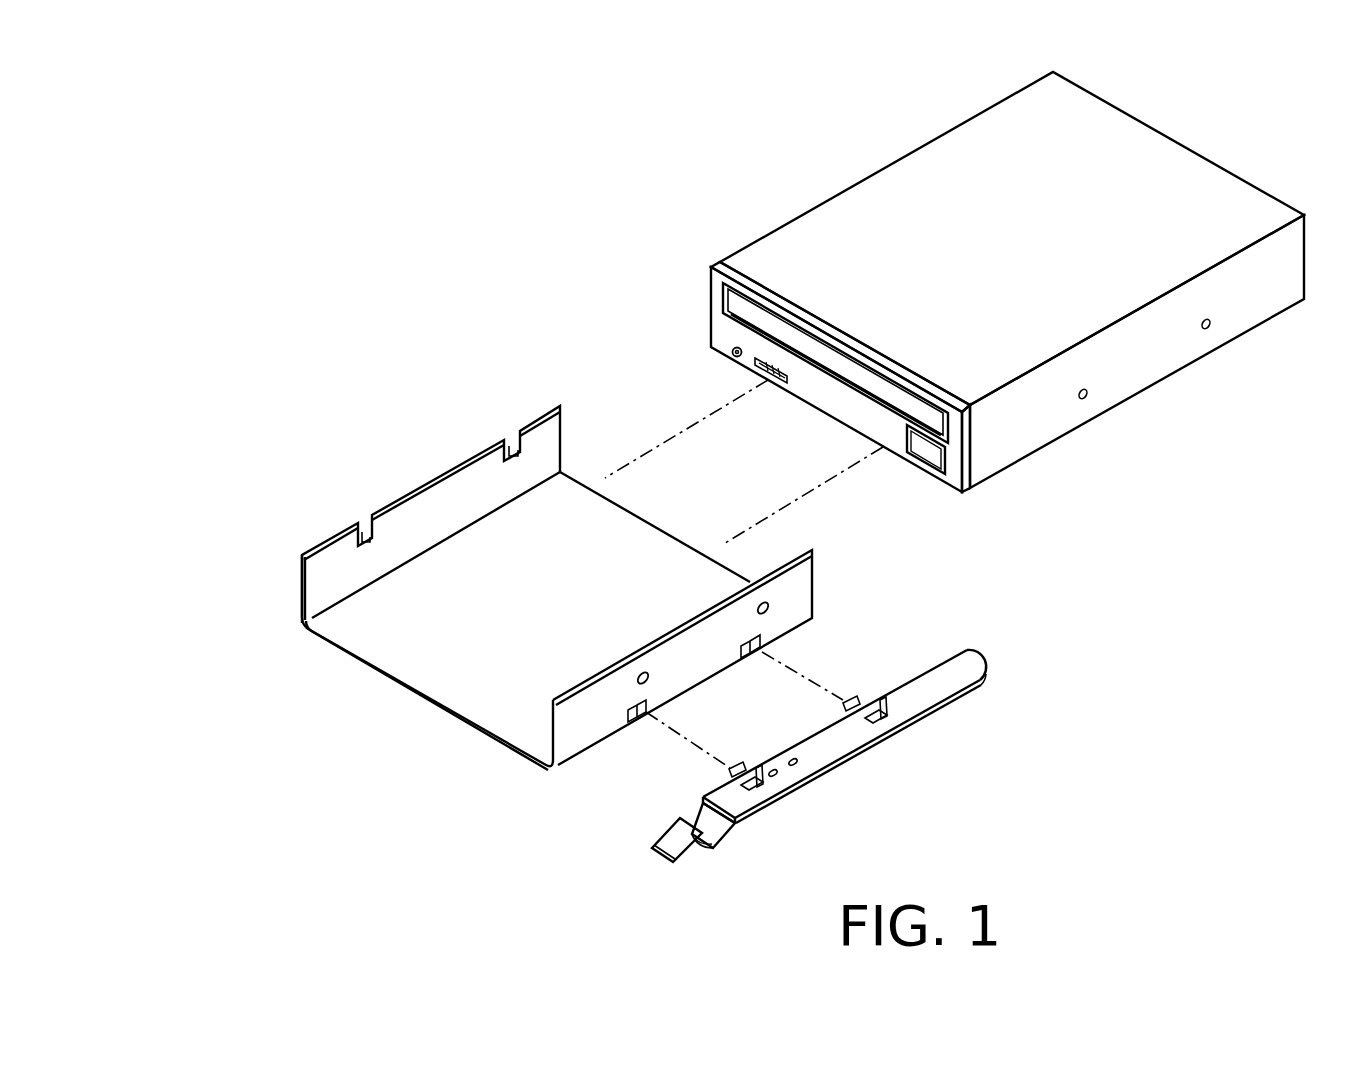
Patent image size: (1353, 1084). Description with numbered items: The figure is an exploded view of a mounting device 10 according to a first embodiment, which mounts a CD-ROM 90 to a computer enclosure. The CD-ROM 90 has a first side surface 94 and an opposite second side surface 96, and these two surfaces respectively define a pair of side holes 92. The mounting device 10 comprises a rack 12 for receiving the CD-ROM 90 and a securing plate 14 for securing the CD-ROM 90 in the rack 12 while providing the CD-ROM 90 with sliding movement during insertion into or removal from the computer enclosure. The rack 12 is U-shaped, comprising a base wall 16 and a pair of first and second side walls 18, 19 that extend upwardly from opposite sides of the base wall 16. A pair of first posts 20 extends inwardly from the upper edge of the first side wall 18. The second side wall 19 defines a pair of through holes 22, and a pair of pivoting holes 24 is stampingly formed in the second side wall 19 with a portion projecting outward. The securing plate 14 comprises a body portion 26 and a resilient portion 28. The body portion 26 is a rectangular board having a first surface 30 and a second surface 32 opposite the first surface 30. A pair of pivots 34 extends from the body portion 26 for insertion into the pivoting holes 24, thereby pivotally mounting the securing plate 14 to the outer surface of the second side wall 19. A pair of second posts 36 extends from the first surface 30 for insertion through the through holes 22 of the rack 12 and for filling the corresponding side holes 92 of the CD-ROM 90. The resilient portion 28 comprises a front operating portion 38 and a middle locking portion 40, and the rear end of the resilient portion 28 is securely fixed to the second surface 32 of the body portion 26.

The mounting device 10 is at (293, 745).
The rack 12 is at (520, 626).
The securing plate 14 is at (841, 755).
The base wall 16 is at (443, 657).
The first side wall 18 is at (318, 576).
The second side wall 19 is at (578, 723).
The first posts 20 is at (517, 445).
The through holes 22 is at (772, 608).
The pivoting holes 24 is at (762, 655).
The body portion 26 is at (975, 688).
The resilient portion 28 is at (725, 828).
The first surface 30 is at (955, 665).
The second surface 32 is at (938, 704).
The pivots 34 is at (849, 703).
The second posts 36 is at (887, 712).
The front operating portion 38 is at (672, 853).
The middle locking portion 40 is at (703, 840).
The CD-ROM 90 is at (1017, 282).
The side holes 92 is at (1212, 331).
The first side surface 94 is at (860, 180).
The second side surface 96 is at (1155, 349).